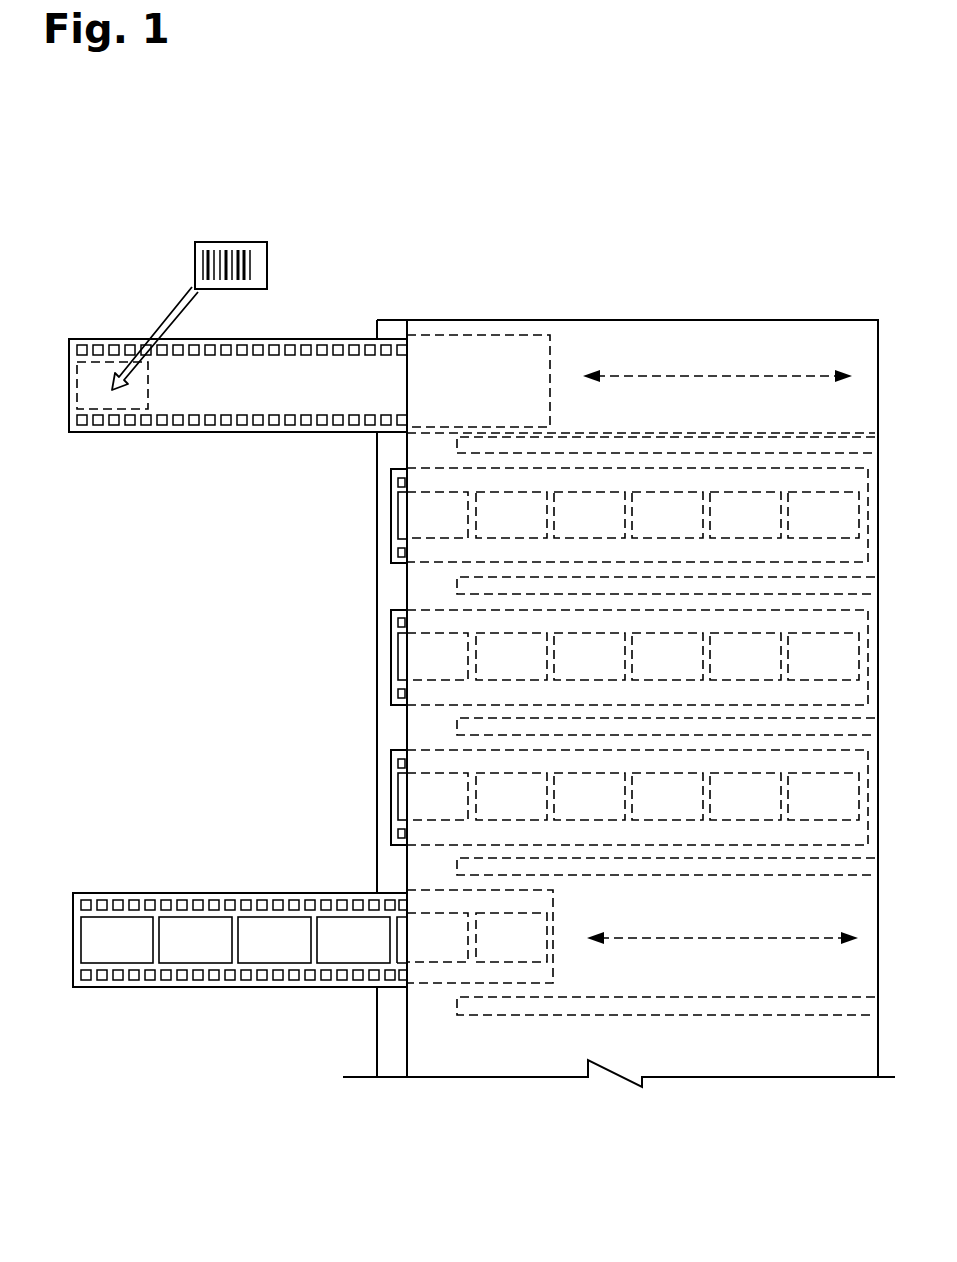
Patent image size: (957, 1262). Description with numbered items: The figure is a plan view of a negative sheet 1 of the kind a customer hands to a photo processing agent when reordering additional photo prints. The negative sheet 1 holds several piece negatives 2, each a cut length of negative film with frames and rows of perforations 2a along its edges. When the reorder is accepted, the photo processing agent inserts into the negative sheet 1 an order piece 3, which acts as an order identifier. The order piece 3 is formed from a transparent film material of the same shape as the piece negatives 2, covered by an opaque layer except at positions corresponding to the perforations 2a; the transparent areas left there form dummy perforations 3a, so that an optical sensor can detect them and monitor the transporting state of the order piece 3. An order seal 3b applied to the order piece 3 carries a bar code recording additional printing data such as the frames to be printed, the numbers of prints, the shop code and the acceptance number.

The negative sheet 1 is at (636, 316).
The piece negatives 2 is at (386, 517).
The perforations 2a is at (398, 482).
The order piece 3 is at (302, 333).
The dummy perforations 3a is at (113, 345).
The order seal 3b is at (263, 263).